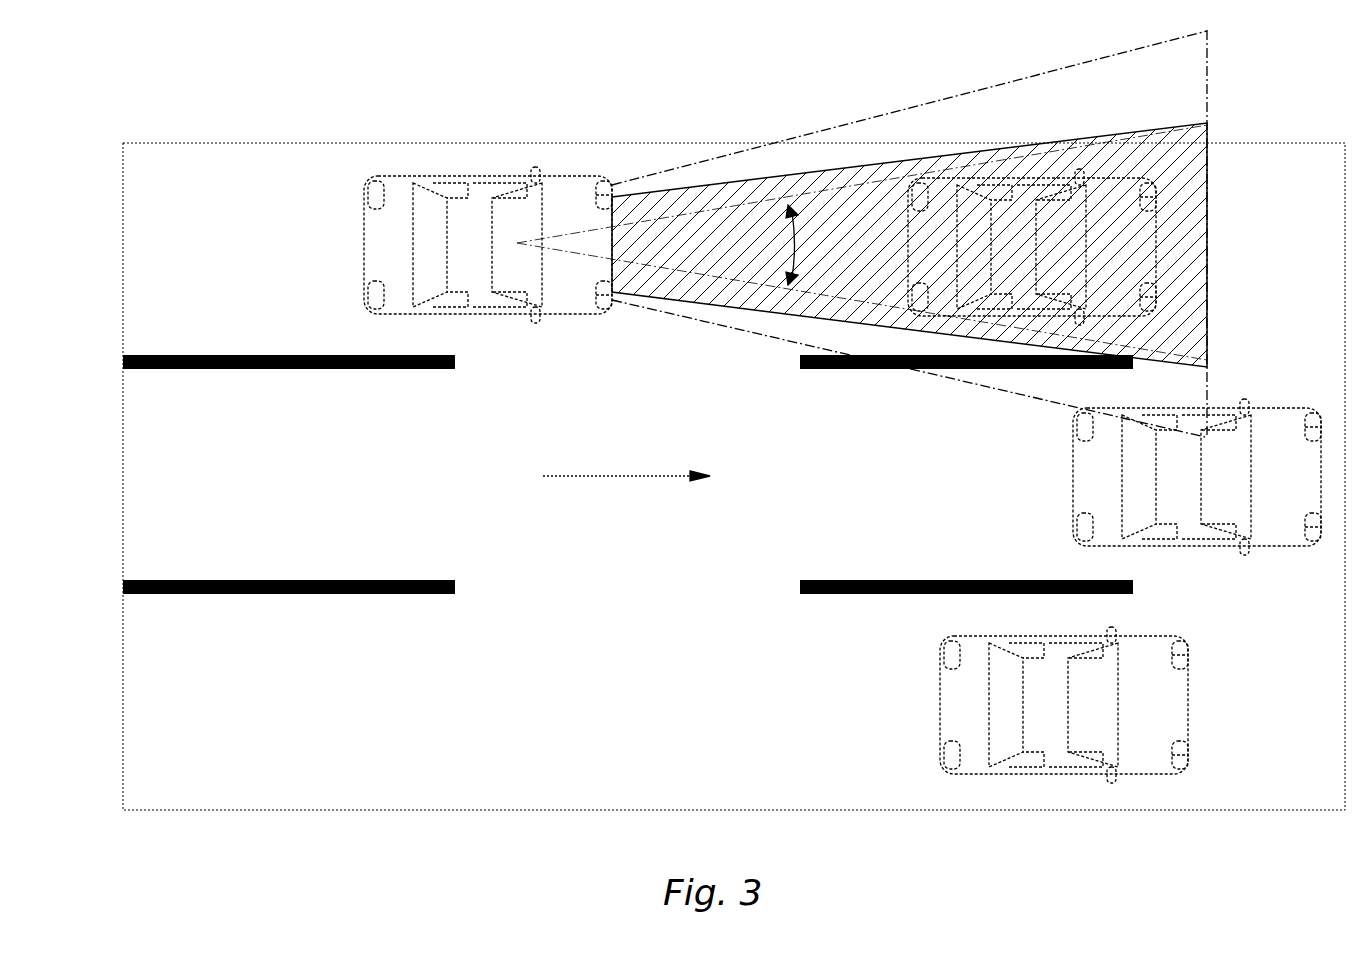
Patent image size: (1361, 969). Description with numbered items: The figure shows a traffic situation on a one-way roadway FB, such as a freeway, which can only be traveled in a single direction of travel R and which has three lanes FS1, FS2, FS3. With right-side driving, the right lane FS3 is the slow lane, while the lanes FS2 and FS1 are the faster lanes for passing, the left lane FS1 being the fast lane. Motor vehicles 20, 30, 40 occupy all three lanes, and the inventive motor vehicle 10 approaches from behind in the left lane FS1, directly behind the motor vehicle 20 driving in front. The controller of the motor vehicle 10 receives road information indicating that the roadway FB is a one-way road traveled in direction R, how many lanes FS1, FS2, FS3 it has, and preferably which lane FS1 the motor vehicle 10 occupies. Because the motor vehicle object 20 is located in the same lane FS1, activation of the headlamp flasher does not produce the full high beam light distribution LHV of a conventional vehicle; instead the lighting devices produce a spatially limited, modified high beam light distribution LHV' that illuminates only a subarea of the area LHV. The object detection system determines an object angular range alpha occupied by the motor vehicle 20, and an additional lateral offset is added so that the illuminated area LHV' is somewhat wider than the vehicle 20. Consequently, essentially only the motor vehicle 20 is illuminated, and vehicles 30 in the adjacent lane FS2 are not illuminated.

The motor vehicle 10 is at (358, 255).
The motor vehicle object driving in front 20 is at (1157, 247).
The motor vehicle in adjacent lane 30 is at (1093, 477).
The motor vehicle in slow lane 40 is at (943, 713).
The high beam light distribution LHV is at (971, 233).
The modified high beam light distribution LHV' is at (901, 245).
The roadway FB is at (590, 810).
The left lane (fast lane) FS1 is at (226, 251).
The middle lane FS2 is at (226, 483).
The right lane (slow lane) FS3 is at (226, 706).
The direction of travel R is at (626, 454).
The object angular range alpha is at (749, 245).